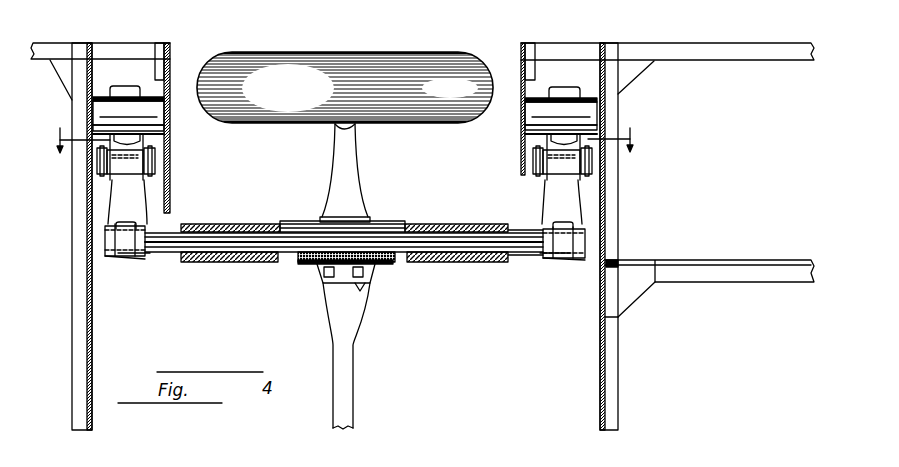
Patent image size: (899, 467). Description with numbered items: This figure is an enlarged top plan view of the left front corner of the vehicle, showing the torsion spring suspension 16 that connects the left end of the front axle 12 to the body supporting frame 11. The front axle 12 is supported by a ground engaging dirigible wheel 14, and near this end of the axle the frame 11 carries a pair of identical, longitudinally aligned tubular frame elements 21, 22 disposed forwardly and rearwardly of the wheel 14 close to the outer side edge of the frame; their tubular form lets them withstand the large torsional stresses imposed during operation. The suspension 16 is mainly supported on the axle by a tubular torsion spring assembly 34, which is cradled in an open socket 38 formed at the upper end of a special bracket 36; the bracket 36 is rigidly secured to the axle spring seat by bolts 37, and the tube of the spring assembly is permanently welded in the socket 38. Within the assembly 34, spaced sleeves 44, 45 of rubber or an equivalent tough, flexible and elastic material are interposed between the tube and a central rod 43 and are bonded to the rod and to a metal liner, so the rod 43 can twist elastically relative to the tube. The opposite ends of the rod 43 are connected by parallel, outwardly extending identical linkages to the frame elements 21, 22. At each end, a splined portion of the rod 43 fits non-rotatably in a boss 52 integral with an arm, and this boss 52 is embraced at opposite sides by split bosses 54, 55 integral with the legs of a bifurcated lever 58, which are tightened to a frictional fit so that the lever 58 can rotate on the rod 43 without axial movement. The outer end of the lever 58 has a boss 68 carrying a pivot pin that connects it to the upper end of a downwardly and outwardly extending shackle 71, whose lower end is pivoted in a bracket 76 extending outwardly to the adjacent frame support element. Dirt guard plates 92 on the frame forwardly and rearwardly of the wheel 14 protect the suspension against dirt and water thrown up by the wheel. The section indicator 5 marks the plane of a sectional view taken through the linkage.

The section line 5- 5 is at (347, 140).
The body supporting frame 11 is at (755, 43).
The front axle 12 is at (340, 338).
The dirigible wheel 14 is at (423, 62).
The torsion spring suspension 16 is at (434, 263).
The tubular frame element 21 is at (588, 115).
The tubular frame element 22 is at (168, 120).
The tubular torsion spring assembly 34 is at (248, 264).
The bracket 36 is at (357, 285).
The bolt 37 is at (324, 272).
The open socket 38 is at (373, 220).
The rod 43 is at (522, 249).
The sleeve 44 is at (407, 222).
The sleeve 45 is at (294, 221).
The boss 52 is at (132, 258).
The split boss 54 is at (147, 258).
The split boss 55 is at (110, 258).
The bifurcated lever 58 is at (133, 205).
The boss 68 is at (118, 163).
The shackle 71 is at (156, 166).
The bracket 76 is at (120, 91).
The dirt guard plate 92 is at (170, 197).